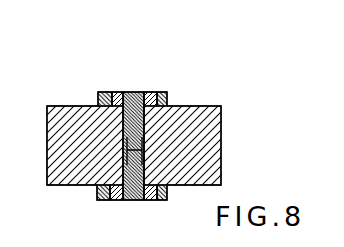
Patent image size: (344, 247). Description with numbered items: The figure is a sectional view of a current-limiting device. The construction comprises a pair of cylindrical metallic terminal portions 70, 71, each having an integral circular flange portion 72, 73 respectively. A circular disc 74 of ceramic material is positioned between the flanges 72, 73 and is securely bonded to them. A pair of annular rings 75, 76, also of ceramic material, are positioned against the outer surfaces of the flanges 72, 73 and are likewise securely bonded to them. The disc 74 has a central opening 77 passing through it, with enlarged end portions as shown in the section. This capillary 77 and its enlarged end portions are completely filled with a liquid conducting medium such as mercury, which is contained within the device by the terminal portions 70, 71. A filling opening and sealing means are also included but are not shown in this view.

The cylindrical metallic terminal portion 70 is at (54, 106).
The cylindrical metallic terminal portion 71 is at (205, 107).
The circular flange portion 72 is at (112, 92).
The circular flange portion 73 is at (152, 92).
The circular disc 74 is at (141, 92).
The annular ring 75 is at (99, 92).
The annular ring 76 is at (167, 94).
The central opening 77 is at (132, 200).